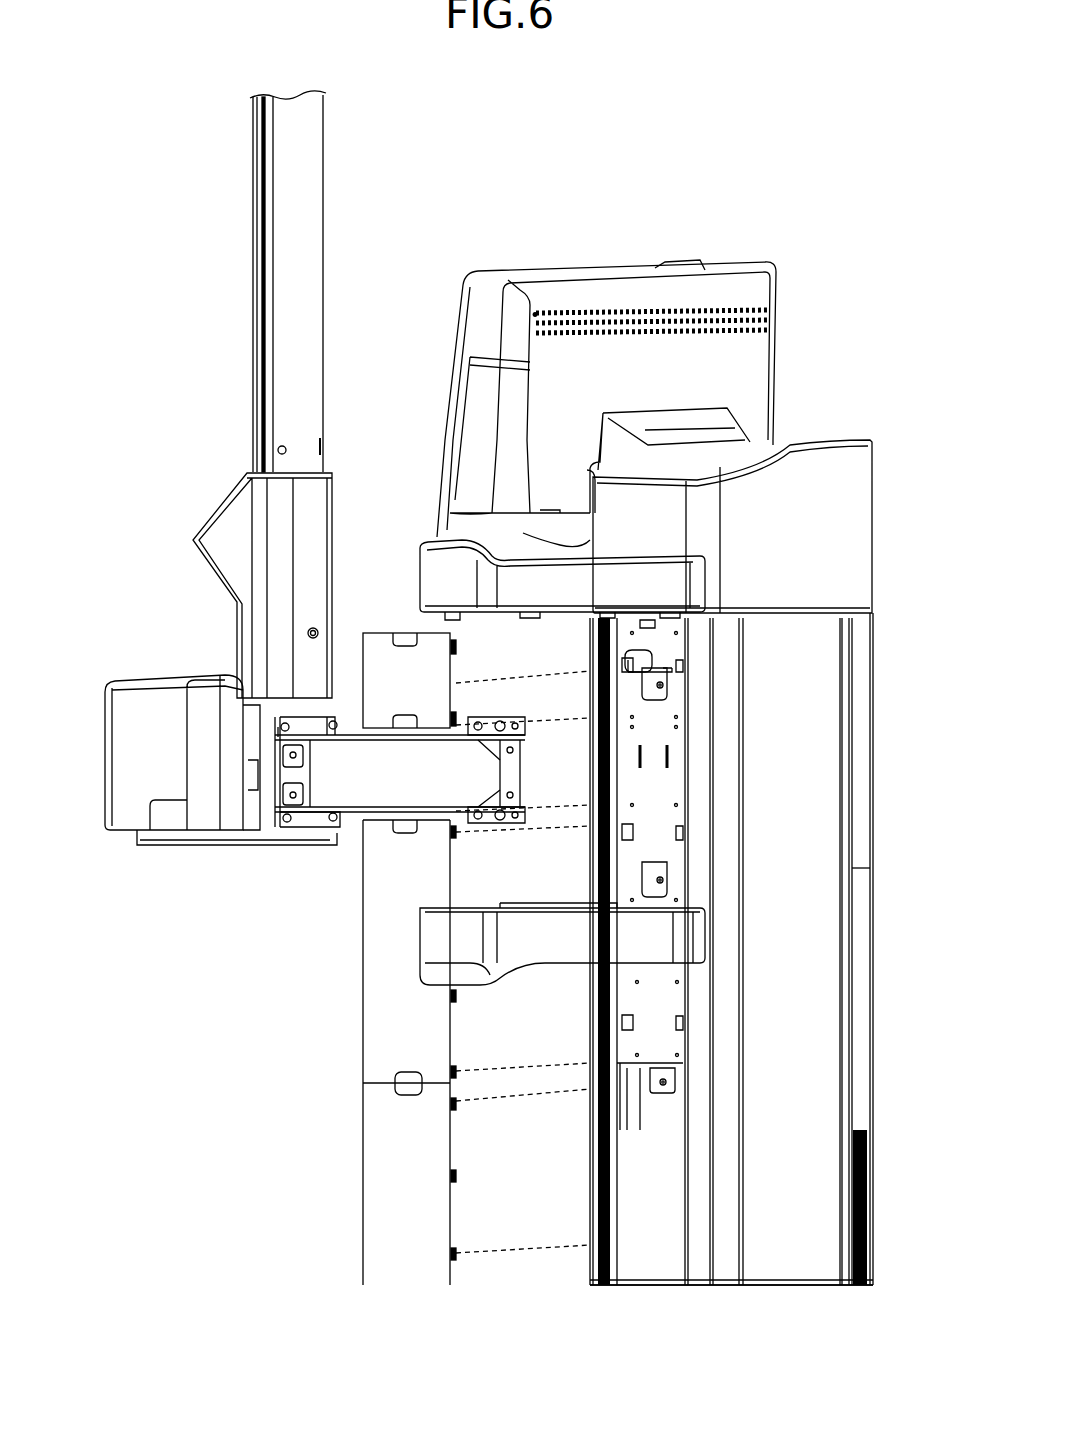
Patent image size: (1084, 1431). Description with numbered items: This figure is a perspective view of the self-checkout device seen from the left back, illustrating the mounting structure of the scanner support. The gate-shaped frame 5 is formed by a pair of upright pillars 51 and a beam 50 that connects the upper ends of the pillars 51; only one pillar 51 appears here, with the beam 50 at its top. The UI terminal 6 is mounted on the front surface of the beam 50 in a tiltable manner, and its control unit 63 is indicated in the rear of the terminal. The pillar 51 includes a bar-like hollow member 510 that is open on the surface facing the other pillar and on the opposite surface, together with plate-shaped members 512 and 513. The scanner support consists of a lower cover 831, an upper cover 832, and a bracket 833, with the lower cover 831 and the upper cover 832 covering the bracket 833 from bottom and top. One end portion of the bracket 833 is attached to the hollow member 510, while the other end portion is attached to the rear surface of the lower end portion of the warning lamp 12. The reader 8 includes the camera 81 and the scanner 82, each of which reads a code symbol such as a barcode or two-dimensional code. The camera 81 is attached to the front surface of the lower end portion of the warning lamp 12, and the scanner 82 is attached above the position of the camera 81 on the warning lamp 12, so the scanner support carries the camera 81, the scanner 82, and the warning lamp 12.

The warning lamp 12 is at (305, 183).
The reader 8 is at (284, 687).
The scanner 82 is at (215, 577).
The camera 81 is at (150, 762).
The bracket 833 is at (362, 790).
The plate-shaped member 512 is at (357, 933).
The plate-shaped member 513 is at (410, 1117).
The upper cover 832 is at (445, 560).
The lower cover 831 is at (445, 948).
The UI terminal 6 is at (606, 378).
The control unit 63 is at (608, 380).
The gate-shaped frame 5 is at (774, 905).
The beam 50 is at (835, 525).
The pillar 51 is at (855, 948).
The hollow member 510 is at (795, 1250).